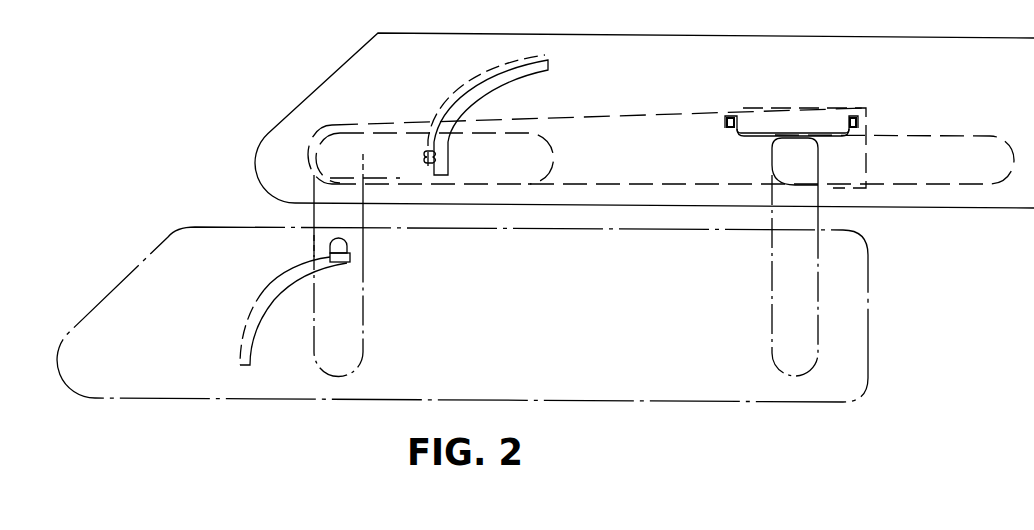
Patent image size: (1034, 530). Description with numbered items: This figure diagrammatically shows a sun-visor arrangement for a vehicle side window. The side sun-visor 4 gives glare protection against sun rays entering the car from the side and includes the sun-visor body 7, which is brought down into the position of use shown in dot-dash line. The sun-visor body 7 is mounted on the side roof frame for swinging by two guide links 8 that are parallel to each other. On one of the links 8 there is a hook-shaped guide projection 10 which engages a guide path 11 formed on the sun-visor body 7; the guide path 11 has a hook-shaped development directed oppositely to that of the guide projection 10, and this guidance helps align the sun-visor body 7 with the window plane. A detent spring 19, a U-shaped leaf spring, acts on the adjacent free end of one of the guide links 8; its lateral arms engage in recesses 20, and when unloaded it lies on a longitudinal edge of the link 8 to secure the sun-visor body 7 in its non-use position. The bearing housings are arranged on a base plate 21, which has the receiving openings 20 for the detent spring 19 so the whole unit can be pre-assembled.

The side sun-visor 4 is at (243, 156).
The sun-visor body 7 is at (627, 54).
The guide links 8 is at (532, 132).
The hook-shaped guide projection 10 is at (421, 157).
The guide path 11 is at (477, 78).
The detent spring 19 is at (764, 128).
The recesses 20 is at (747, 128).
The base plate 21 is at (670, 87).